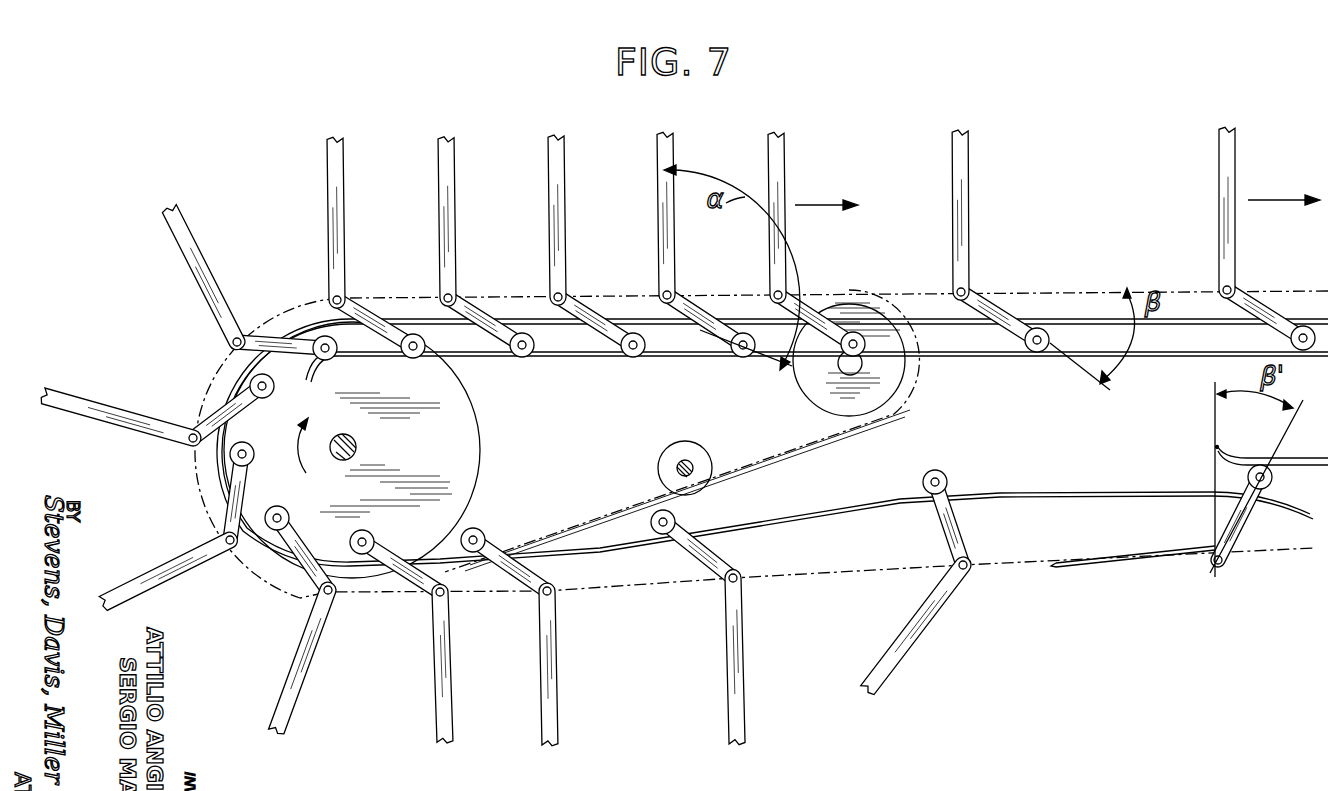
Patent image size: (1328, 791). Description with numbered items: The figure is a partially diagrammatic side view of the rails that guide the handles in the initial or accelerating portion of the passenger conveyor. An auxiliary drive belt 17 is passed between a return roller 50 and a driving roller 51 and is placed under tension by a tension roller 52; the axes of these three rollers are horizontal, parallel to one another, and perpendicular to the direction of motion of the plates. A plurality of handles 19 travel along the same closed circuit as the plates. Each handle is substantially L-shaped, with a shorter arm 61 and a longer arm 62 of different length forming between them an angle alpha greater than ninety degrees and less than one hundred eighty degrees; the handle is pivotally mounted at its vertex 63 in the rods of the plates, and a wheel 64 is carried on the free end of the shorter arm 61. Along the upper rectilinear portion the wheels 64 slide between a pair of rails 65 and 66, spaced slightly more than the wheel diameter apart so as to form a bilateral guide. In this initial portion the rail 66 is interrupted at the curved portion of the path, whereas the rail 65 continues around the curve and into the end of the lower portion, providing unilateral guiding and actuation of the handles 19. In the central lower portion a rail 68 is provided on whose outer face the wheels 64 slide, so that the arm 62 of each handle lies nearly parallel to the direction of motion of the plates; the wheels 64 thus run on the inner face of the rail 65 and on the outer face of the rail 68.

The auxiliary drive belt 17 is at (778, 467).
The handles 19 is at (673, 435).
The return roller 50 is at (883, 390).
The driving roller 51 is at (445, 440).
The tension roller 52 is at (670, 455).
The shorter arm 61 is at (720, 338).
The longer arm 62 is at (657, 192).
The vertex 63 is at (668, 293).
The wheel 64 is at (743, 357).
The rail 65 is at (1073, 320).
The rail 66 is at (1170, 358).
The rail 68 is at (1313, 456).